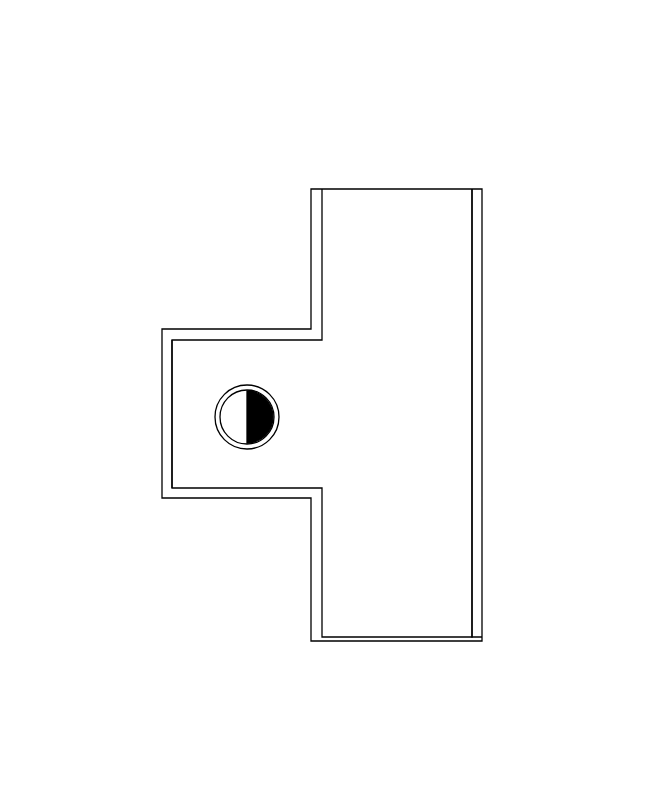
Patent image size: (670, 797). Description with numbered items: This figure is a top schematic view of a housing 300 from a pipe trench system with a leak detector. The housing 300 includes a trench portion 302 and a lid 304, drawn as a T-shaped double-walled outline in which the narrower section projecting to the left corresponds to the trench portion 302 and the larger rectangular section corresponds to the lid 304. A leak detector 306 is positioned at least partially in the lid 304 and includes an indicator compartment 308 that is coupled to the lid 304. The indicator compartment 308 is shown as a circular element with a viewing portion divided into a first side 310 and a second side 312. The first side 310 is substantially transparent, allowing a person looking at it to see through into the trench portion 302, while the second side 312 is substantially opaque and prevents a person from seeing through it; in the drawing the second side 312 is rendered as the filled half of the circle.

The housing 300 is at (147, 76).
The trench portion 302 is at (162, 329).
The lid 304 is at (442, 260).
The leak detector 306 is at (212, 385).
The indicator compartment 308 is at (218, 402).
The first side 310 is at (233, 423).
The second side 312 is at (257, 444).